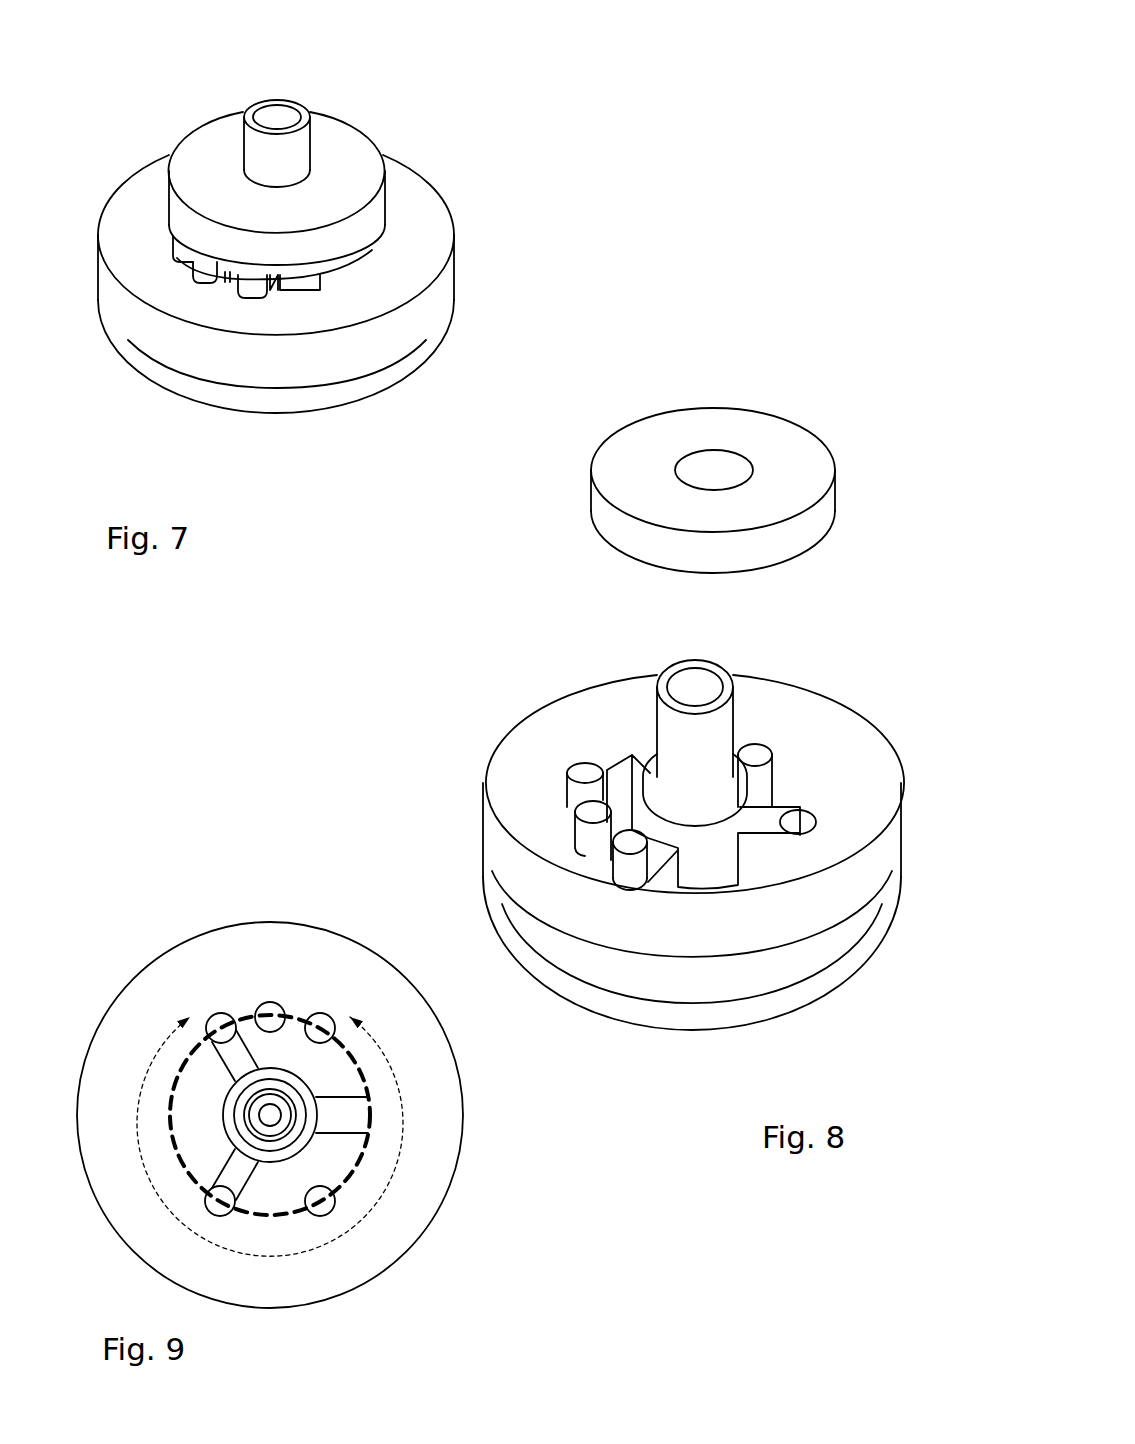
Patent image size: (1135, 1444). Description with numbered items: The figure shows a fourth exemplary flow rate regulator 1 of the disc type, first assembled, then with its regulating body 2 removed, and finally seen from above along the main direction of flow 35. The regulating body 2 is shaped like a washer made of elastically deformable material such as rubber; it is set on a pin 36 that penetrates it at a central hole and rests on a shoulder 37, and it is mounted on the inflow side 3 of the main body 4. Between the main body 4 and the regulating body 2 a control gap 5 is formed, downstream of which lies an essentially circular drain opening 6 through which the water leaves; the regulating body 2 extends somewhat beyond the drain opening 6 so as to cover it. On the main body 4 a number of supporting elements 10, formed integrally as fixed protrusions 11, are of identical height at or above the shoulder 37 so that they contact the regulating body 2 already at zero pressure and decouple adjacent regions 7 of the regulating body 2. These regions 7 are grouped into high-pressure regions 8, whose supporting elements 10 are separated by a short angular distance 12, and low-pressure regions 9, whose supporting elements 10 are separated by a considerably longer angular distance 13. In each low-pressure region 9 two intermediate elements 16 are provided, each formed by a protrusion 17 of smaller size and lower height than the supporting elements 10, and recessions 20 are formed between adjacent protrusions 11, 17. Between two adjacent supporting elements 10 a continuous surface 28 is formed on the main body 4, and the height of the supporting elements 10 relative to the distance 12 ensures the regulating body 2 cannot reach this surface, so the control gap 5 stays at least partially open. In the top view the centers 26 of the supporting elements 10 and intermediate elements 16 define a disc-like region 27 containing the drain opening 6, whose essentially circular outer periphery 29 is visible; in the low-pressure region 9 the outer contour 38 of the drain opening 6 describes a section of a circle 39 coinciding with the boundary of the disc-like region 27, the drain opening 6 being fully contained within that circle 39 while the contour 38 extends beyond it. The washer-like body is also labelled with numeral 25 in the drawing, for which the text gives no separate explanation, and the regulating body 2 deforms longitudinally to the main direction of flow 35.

In FIG. 7, the flow rate regulator 1 is at (352, 229).
In FIG. 7, the regulating body 2 is at (277, 151).
In FIG. 8, the regulating body 2 is at (785, 453).
In FIG. 7, the inflow side 3 is at (247, 229).
In FIG. 8, the inflow side 3 is at (679, 793).
In FIG. 7, the main body 4 is at (310, 266).
In FIG. 8, the main body 4 is at (771, 728).
In FIG. 9, the main body 4 is at (192, 990).
In FIG. 7, the control gap 5 is at (310, 293).
In FIG. 8, the drain opening 6 is at (751, 729).
In FIG. 9, the drain opening 6 is at (213, 1130).
In FIG. 8, the regions 7 is at (606, 845).
In FIG. 9, the regions 7 is at (321, 1072).
In FIG. 8, the high-pressure regions 8 is at (530, 829).
In FIG. 9, the high-pressure regions 8 is at (294, 998).
In FIG. 8, the low-pressure regions 9 is at (705, 905).
In FIG. 9, the low-pressure regions 9 is at (378, 1118).
In FIG. 7, the supporting elements 10 is at (187, 262).
In FIG. 8, the supporting elements 10 is at (534, 829).
In FIG. 9, the supporting elements 10 is at (256, 1072).
In FIG. 8, the fixed protrusions 11 is at (580, 762).
In FIG. 9, the distance 12 is at (254, 1115).
In FIG. 9, the distance 13 is at (293, 1090).
In FIG. 8, the intermediate element 16 is at (842, 724).
In FIG. 8, the protrusion 17 is at (790, 747).
In FIG. 8, the recessions 20 is at (830, 782).
In FIG. 8, the washer 25 is at (729, 467).
In FIG. 9, the centers 26 is at (256, 1072).
In FIG. 9, the disc-like region 27 is at (190, 1020).
In FIG. 9, the continuous surface 28 is at (244, 1014).
In FIG. 7, the circular outer periphery 29 is at (390, 292).
In FIG. 7, the main direction of flow 35 is at (385, 140).
In FIG. 7, the pin 36 is at (270, 112).
In FIG. 8, the pin 36 is at (697, 678).
In FIG. 8, the shoulder 37 is at (647, 795).
In FIG. 9, the outer contour 38 is at (346, 1176).
In FIG. 9, the circle 39 is at (322, 1214).